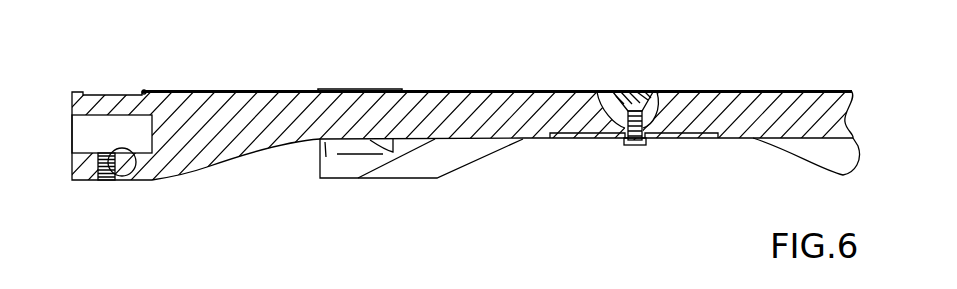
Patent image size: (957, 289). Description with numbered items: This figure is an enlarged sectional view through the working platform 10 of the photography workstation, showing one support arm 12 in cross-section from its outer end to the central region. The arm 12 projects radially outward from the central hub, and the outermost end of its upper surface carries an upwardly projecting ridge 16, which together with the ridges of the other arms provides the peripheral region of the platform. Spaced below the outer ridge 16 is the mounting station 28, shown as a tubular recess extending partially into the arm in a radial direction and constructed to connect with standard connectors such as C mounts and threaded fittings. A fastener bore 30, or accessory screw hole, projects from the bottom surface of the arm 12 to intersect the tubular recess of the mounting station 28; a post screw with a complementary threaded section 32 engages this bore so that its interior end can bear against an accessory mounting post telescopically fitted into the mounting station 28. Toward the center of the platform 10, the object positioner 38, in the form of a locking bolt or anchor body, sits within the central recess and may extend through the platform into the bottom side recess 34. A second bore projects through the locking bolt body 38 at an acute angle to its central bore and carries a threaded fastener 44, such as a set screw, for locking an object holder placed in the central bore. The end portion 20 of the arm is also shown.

The working platform 10 is at (330, 172).
The support arm 12 is at (247, 100).
The upwardly projecting ridge 16 is at (362, 90).
The end portion 20 is at (803, 90).
The mounting station 28 is at (80, 122).
The fastener bore 30 is at (128, 178).
The threaded section 32 is at (110, 178).
The bottom side recess 34 is at (687, 138).
The object positioner 38 is at (597, 92).
The threaded fastener 44 is at (633, 140).